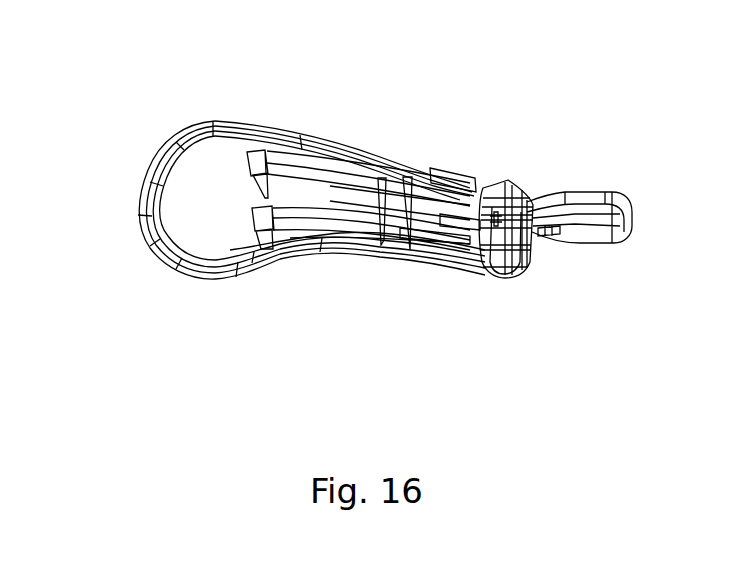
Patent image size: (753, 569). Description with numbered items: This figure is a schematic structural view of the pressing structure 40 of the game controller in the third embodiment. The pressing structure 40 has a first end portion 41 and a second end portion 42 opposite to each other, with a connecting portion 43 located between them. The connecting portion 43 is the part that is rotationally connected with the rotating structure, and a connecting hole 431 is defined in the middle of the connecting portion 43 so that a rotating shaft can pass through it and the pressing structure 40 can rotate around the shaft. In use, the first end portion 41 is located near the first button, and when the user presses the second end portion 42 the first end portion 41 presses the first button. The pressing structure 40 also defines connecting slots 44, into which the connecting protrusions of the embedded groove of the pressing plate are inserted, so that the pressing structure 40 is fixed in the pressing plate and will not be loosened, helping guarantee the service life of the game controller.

The pressing structure 40 is at (102, 25).
The first end portion 41 is at (600, 200).
The second end portion 42 is at (185, 230).
The connecting portion 43 is at (496, 278).
The connecting hole 431 is at (492, 215).
The connecting slots 44 is at (302, 178).